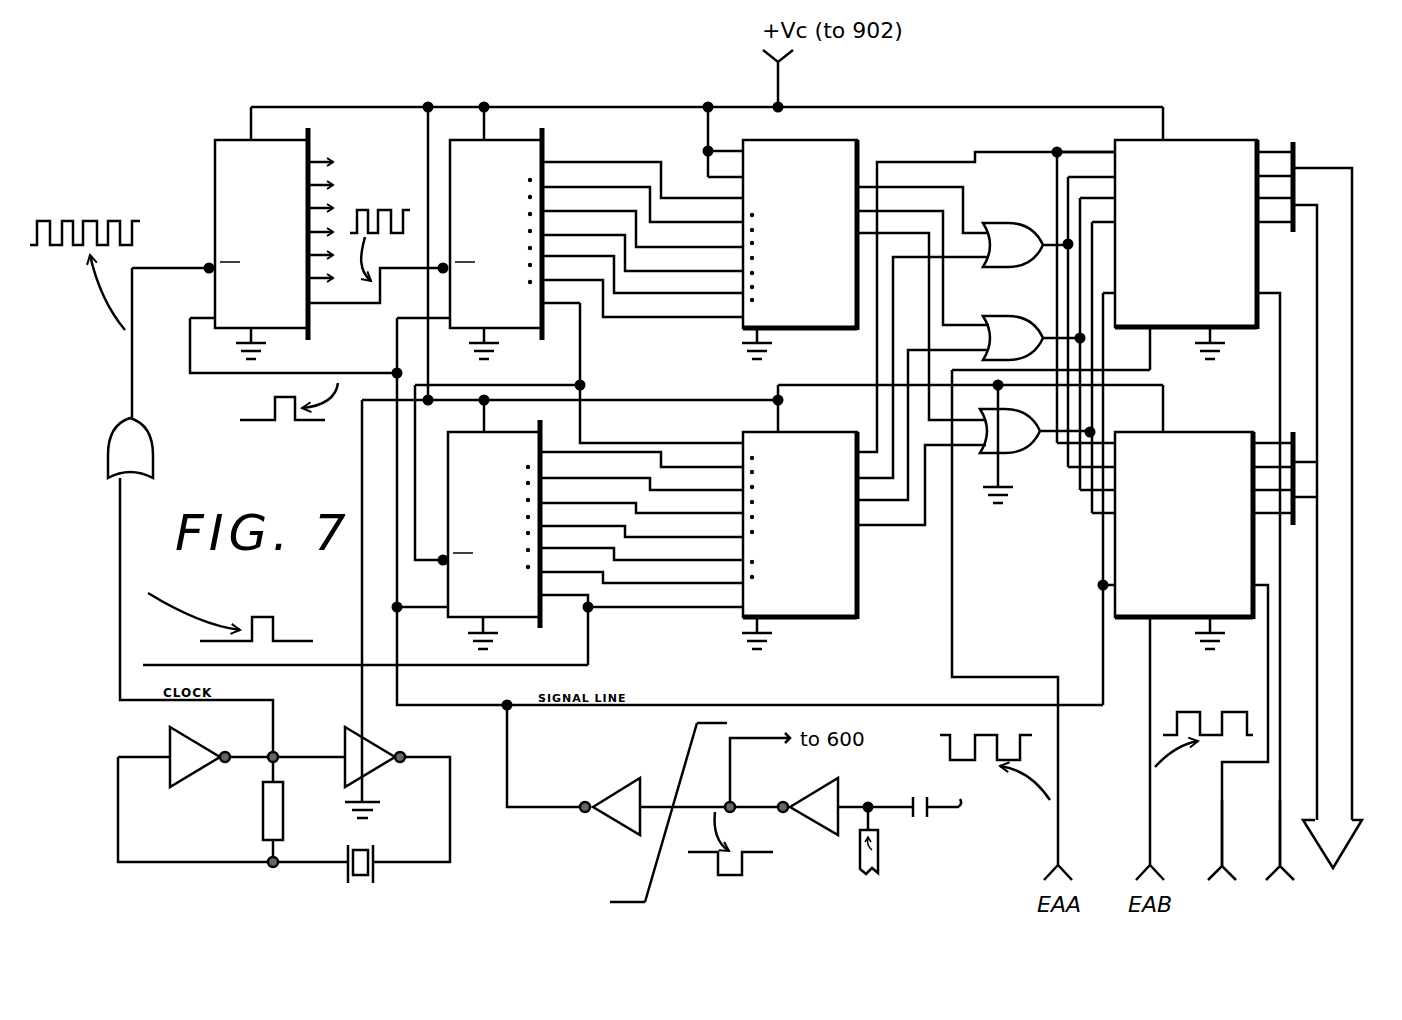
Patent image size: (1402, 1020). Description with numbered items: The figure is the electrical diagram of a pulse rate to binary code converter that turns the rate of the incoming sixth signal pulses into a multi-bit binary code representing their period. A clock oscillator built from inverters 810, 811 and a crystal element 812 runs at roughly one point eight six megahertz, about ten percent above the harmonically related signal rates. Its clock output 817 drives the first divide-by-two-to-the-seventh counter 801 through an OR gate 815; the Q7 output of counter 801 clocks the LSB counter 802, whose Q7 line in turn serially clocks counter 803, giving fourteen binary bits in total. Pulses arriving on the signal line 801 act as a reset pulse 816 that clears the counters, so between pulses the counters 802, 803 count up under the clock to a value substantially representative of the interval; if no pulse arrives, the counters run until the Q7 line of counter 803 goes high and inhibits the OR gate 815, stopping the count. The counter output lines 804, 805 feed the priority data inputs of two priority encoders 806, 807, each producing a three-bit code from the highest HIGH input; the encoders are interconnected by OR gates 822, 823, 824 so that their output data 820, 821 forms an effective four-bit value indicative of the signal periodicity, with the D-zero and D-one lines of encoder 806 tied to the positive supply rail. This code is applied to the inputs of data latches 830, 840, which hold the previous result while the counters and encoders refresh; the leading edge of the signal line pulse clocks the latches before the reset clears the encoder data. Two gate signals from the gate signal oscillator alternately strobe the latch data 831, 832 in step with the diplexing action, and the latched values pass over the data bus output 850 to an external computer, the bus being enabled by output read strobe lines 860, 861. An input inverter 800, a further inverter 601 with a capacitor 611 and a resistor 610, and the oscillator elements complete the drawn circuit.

The divide-by-two-to-the-seventh counter 801 is at (233, 188).
The divide-by-two-to-the-seventh counter 802 is at (462, 190).
The divide-by-two-to-the-seventh counter 803 is at (476, 453).
The counter output lines 804 is at (570, 198).
The counter output lines 805 is at (582, 489).
The priority encoder 806 is at (812, 163).
The priority encoder 807 is at (810, 595).
The inverter 810 is at (176, 752).
The inverter 811 is at (358, 750).
The crystal element 812 is at (380, 854).
The OR gate 815 is at (142, 462).
The reset pulse 816 is at (257, 613).
The clock output 817 is at (72, 213).
The encoder output data 820 is at (915, 205).
The encoder output data 821 is at (870, 490).
The OR gate 822 is at (1010, 240).
The OR gate 823 is at (1012, 334).
The OR gate 824 is at (1012, 449).
The data latch 830 is at (1188, 168).
The latch data 831 is at (1282, 170).
The latch data 832 is at (1285, 443).
The data latch 840 is at (1205, 462).
The data bus output 850 is at (1324, 838).
The output read strobe line 860 is at (1213, 864).
The output read strobe line 861 is at (1270, 865).
The inverter 800 is at (618, 801).
The inverter 601 is at (818, 801).
The capacitor 611 is at (910, 797).
The resistor 610 is at (880, 855).